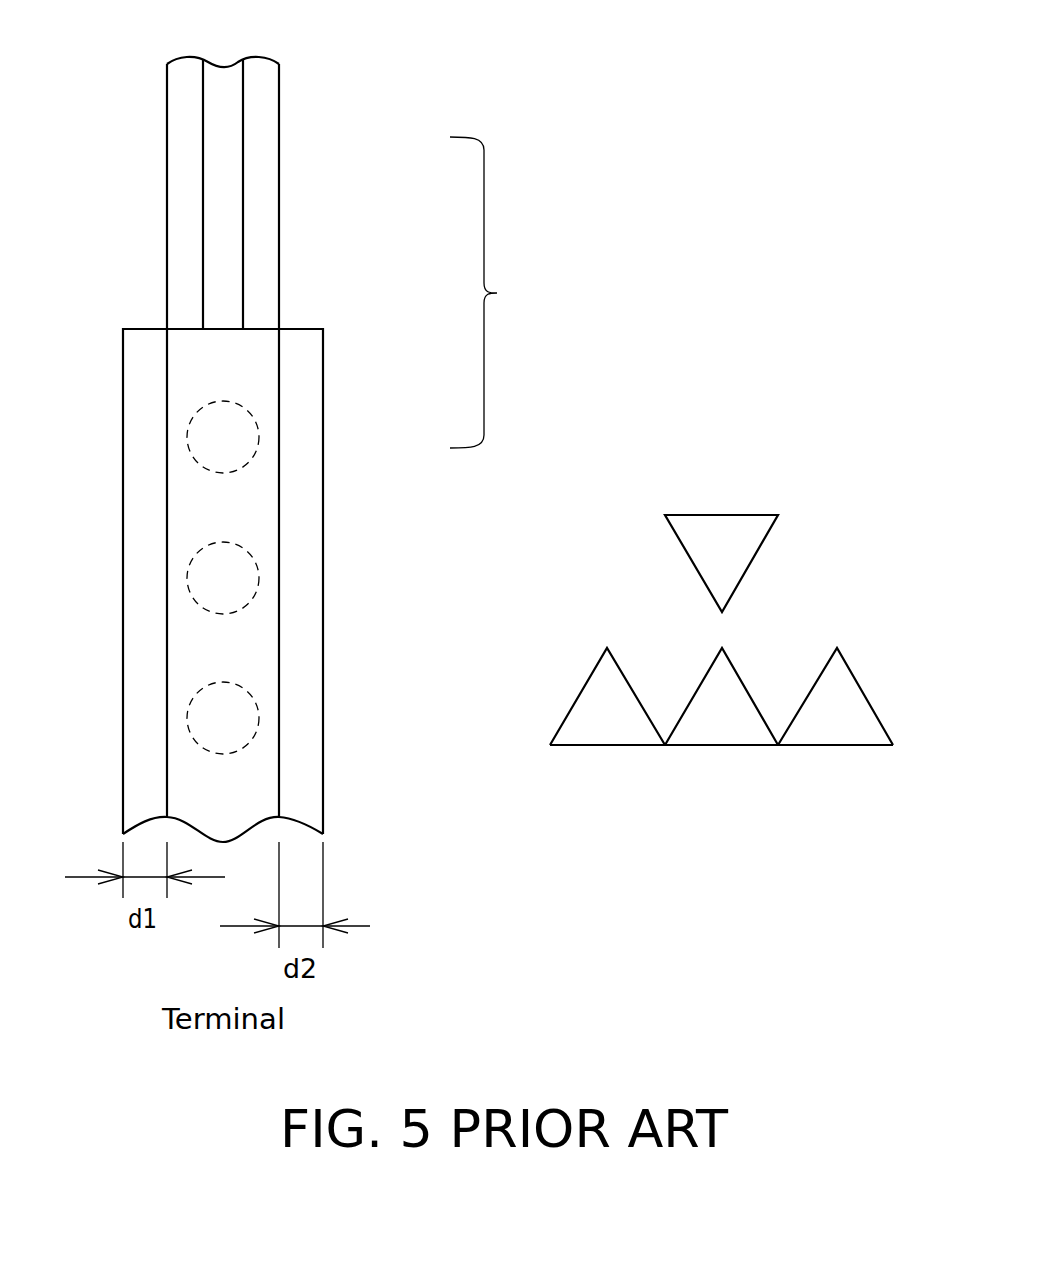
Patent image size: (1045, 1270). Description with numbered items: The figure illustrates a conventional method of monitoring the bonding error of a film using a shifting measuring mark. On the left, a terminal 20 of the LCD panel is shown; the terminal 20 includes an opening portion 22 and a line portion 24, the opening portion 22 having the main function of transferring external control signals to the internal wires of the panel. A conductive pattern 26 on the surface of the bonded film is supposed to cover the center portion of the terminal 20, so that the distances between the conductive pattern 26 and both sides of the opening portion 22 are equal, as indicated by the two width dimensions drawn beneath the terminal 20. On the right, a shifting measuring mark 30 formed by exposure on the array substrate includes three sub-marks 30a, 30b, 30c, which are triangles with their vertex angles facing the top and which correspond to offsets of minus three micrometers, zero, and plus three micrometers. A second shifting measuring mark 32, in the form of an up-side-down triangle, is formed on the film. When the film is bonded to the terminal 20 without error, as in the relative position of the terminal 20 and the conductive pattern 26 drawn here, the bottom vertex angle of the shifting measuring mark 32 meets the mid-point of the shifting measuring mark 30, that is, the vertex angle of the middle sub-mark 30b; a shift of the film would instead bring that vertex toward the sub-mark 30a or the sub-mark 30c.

The terminal 20 is at (497, 293).
The opening portion 22 is at (325, 422).
The line portion 24 is at (243, 183).
The conductive pattern 26 is at (167, 103).
The shifting measuring mark 30 is at (721, 786).
The sub-mark 30a is at (612, 697).
The sub-mark 30b is at (725, 697).
The sub-mark 30c is at (840, 697).
The shifting measuring mark 32 is at (722, 513).